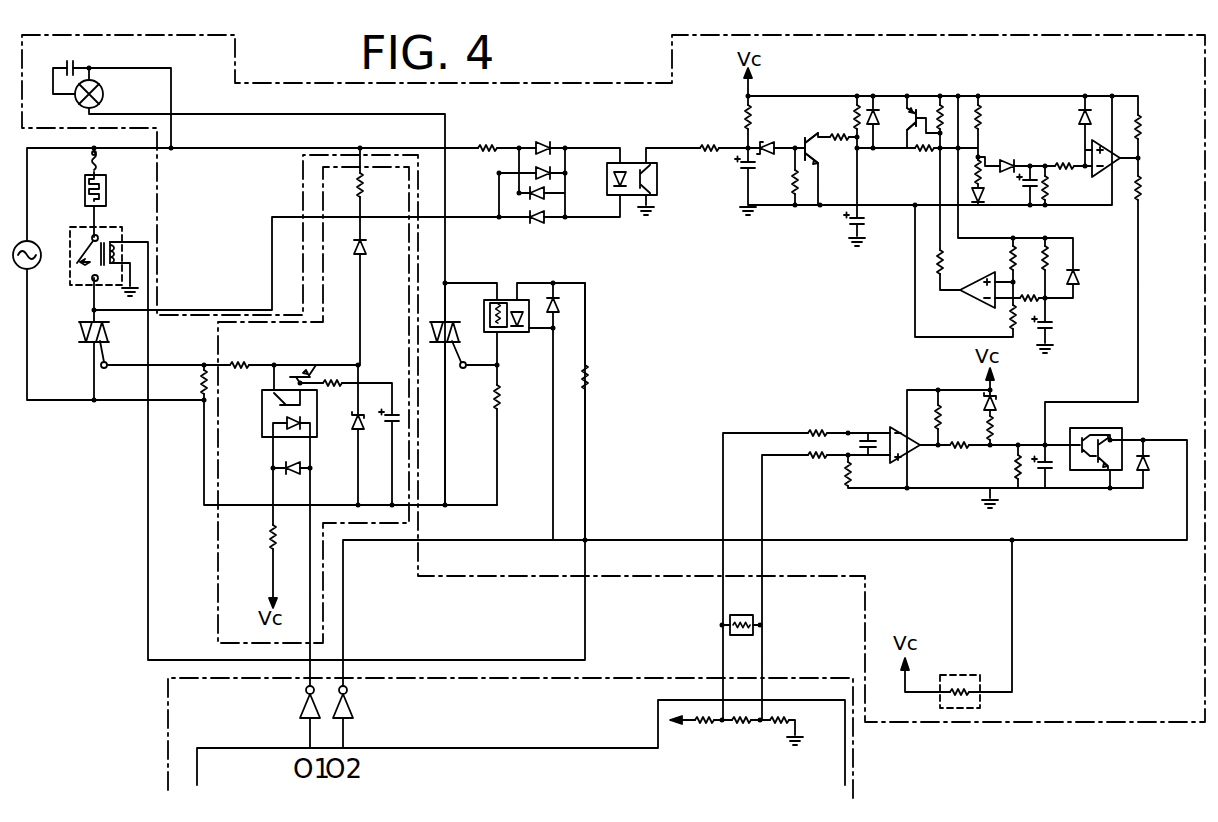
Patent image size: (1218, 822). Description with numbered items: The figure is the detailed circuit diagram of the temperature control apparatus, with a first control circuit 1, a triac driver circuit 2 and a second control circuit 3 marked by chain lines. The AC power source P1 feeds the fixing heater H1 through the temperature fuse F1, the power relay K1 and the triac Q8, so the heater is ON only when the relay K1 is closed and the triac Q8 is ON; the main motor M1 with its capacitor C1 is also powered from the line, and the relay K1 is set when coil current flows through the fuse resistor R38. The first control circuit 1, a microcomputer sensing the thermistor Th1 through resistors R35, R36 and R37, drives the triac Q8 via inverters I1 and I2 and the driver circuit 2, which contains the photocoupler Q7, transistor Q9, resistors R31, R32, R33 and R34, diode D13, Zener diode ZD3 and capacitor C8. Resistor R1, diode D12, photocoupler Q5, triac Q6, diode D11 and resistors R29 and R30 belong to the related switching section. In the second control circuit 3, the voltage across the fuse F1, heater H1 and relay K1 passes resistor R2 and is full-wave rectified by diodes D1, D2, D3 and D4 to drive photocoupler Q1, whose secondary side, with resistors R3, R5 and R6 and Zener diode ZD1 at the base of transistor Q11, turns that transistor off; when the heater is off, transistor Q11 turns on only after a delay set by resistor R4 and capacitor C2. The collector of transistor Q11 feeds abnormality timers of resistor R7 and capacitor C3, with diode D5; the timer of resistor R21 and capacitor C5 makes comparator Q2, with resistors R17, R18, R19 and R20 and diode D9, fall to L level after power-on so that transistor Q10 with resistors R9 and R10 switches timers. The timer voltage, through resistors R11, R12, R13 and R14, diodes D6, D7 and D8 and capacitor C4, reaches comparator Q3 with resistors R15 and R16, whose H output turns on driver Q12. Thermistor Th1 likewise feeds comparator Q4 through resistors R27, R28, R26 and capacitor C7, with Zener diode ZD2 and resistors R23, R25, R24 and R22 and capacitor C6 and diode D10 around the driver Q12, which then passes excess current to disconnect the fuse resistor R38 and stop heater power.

The first control circuit 1 is at (858, 772).
The triac driver circuit 2 is at (218, 573).
The second control circuit 3 is at (615, 83).
The capacitor C1 is at (73, 59).
The main motor M1 is at (103, 92).
The temperature fuse F1 is at (99, 163).
The fixing heater H1 is at (84, 190).
The power relay K1 is at (118, 228).
The AC power source P1 is at (30, 270).
The triac Q8 is at (80, 342).
The resistor R33 is at (205, 378).
The resistor R32 is at (241, 362).
The transistor Q9 is at (308, 370).
The photocoupler Q7 is at (262, 418).
The resistor R31 is at (346, 384).
The diode D13 is at (285, 471).
The Zener diode ZD3 is at (352, 428).
The capacitor C8 is at (388, 430).
The resistor R34 is at (272, 542).
The resistor R1 is at (366, 190).
The diode D12 is at (365, 250).
The inverter I1 is at (300, 710).
The inverter I2 is at (353, 710).
The resistor R2 is at (487, 145).
The diode D1 is at (540, 143).
The diode D2 is at (552, 173).
The diode D3 is at (552, 193).
The diode D4 is at (545, 222).
The photocoupler Q1 is at (622, 162).
The photocoupler Q5 is at (500, 300).
The triac Q6 is at (458, 332).
The diode D11 is at (563, 305).
The resistor R30 is at (503, 400).
The resistor R29 is at (592, 375).
The resistor R3 is at (704, 152).
The resistor R4 is at (745, 118).
The Zener diode ZD1 is at (768, 142).
The capacitor C2 is at (745, 172).
The resistor R5 is at (795, 195).
The resistor R6 is at (838, 134).
The transistor Q11 is at (818, 158).
The resistor R7 is at (857, 115).
The capacitor C3 is at (850, 228).
The diode D5 is at (873, 108).
The transistor Q10 is at (910, 108).
The resistor R9 is at (924, 150).
The resistor R10 is at (940, 112).
The resistor R12 is at (978, 112).
The resistor R11 is at (980, 165).
The diode D6 is at (968, 192).
The diode D7 is at (1005, 160).
The capacitor C4 is at (1027, 190).
The resistor R13 is at (1048, 192).
The resistor R14 is at (1068, 170).
The diode D8 is at (1083, 112).
The comparator Q3 is at (1125, 150).
The resistor R15 is at (1143, 120).
The resistor R16 is at (1142, 195).
The resistor R17 is at (935, 262).
The resistor R19 is at (1008, 262).
The resistor R21 is at (1052, 265).
The diode D9 is at (1080, 280).
The comparator Q2 is at (985, 305).
The resistor R20 is at (1040, 303).
The resistor R18 is at (1018, 332).
The capacitor C5 is at (1052, 332).
The Zener diode ZD2 is at (982, 398).
The resistor R23 is at (995, 434).
The resistor R25 is at (936, 408).
The comparator Q4 is at (890, 430).
The capacitor C7 is at (866, 438).
The resistor R27 is at (815, 430).
The resistor R28 is at (815, 458).
The resistor R26 is at (846, 478).
The resistor R24 is at (955, 450).
The resistor R22 is at (1015, 470).
The capacitor C6 is at (1050, 472).
The driver Q12 is at (1100, 428).
The diode D10 is at (1150, 465).
The thermistor Th1 is at (752, 615).
The resistor R35 is at (700, 730).
The resistor R36 is at (745, 728).
The resistor R37 is at (780, 730).
The fuse resistor R38 is at (962, 685).